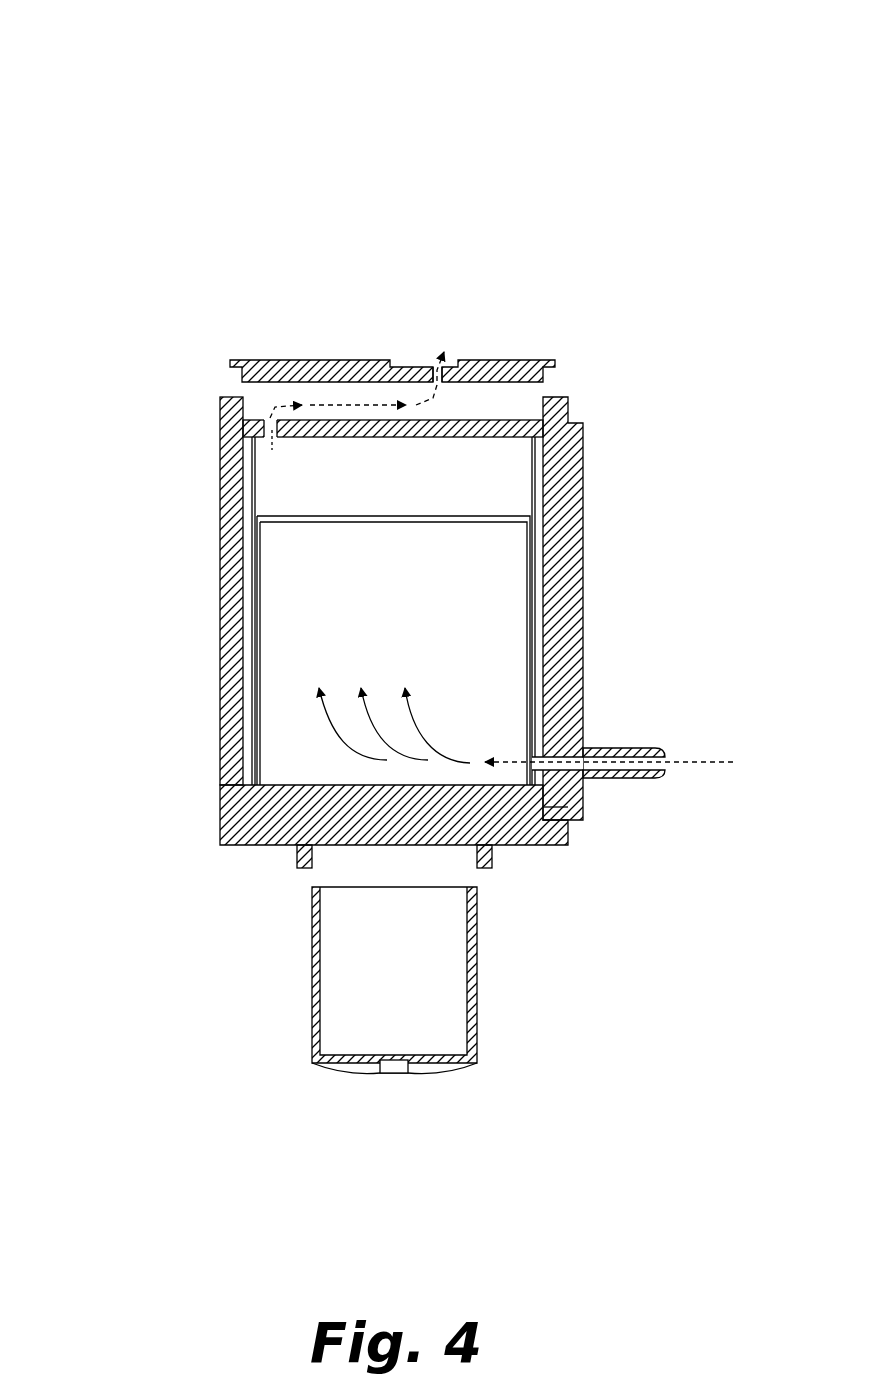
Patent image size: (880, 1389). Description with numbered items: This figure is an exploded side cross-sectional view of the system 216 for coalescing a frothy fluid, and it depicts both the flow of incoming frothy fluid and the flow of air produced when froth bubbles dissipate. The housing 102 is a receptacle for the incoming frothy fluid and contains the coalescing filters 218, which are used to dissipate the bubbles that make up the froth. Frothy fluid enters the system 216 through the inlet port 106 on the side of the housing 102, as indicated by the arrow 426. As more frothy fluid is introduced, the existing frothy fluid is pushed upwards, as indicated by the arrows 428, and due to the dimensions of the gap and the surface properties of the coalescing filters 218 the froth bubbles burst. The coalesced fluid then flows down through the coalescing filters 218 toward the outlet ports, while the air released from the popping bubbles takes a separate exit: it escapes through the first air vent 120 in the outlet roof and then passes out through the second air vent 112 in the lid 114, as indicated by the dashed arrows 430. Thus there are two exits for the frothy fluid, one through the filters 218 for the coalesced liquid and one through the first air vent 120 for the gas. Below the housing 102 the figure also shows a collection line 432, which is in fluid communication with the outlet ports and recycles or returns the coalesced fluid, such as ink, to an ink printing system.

The system for coalescing a frothy fluid 216 is at (198, 80).
The housing 102 is at (220, 733).
The inlet port 106 is at (612, 749).
The second air vent 112 is at (437, 372).
The lid 114 is at (230, 368).
The first air vent 120 is at (243, 437).
The coalescing filters 218 is at (280, 590).
The arrow 426 is at (722, 766).
The arrows 428 is at (410, 700).
The dashed arrows 430 is at (353, 400).
The collection line 432 is at (477, 985).